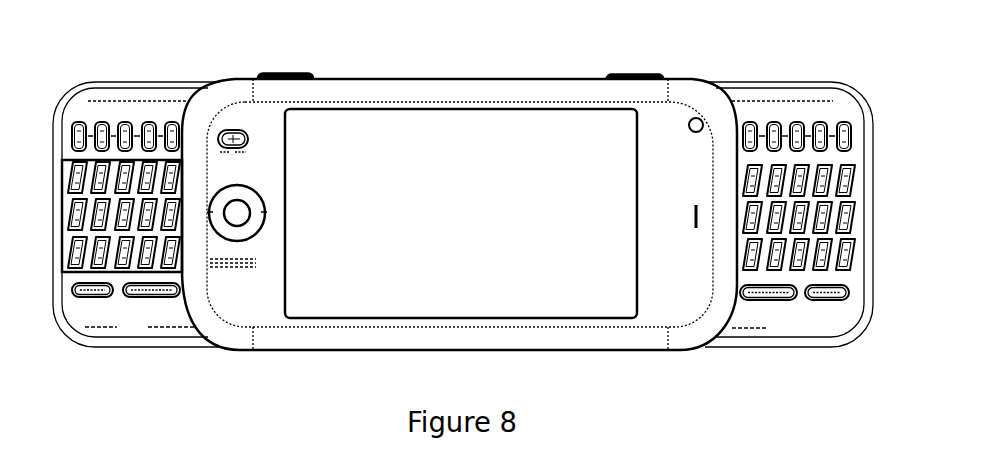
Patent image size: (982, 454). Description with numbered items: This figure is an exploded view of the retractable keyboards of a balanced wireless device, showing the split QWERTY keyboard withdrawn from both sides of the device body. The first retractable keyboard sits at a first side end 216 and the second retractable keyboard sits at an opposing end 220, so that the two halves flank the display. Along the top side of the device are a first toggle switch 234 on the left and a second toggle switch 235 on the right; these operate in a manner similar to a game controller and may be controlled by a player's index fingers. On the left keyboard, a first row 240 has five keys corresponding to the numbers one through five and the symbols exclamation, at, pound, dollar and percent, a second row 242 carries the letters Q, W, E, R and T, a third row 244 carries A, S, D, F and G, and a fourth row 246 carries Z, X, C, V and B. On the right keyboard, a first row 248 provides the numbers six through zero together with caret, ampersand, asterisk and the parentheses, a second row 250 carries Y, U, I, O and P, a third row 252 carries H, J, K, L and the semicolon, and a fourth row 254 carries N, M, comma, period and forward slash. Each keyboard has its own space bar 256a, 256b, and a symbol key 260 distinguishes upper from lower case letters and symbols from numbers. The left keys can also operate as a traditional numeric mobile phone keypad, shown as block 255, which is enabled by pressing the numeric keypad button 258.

The first side end 216 is at (228, 95).
The opposing end 220 is at (698, 103).
The first toggle switch 234 is at (285, 76).
The second toggle switch 235 is at (643, 77).
The first row 240 is at (135, 208).
The second row 242 is at (62, 183).
The third row 244 is at (62, 217).
The fourth row 246 is at (62, 252).
The first row 248 is at (785, 210).
The second row 250 is at (862, 185).
The third row 252 is at (862, 220).
The fourth row 254 is at (862, 253).
The block 255 is at (157, 160).
The space bar 256a is at (157, 298).
The space bar 256b is at (760, 301).
The numeric keypad button 258 is at (93, 298).
The symbol key 260 is at (826, 301).